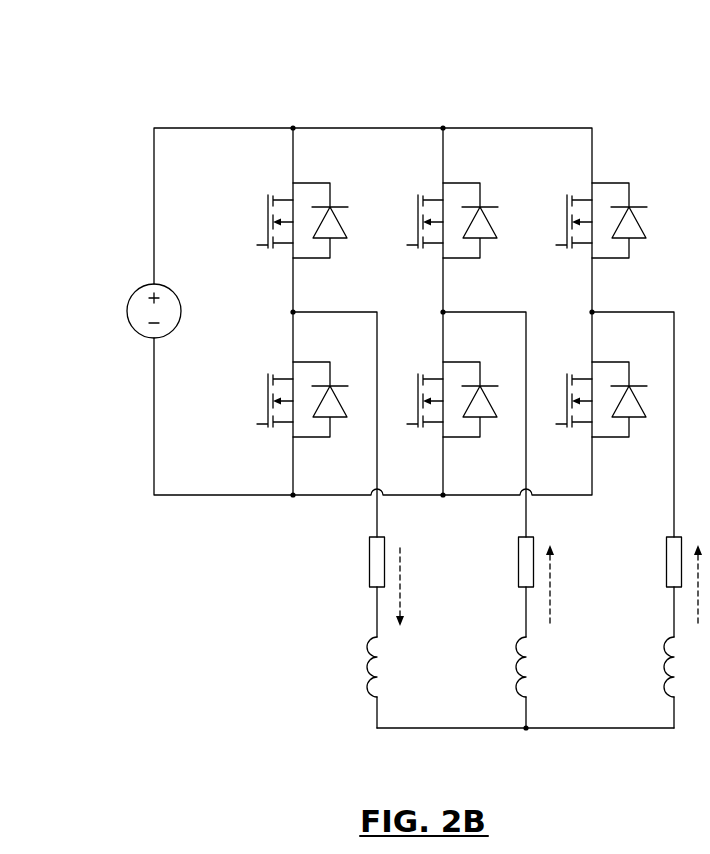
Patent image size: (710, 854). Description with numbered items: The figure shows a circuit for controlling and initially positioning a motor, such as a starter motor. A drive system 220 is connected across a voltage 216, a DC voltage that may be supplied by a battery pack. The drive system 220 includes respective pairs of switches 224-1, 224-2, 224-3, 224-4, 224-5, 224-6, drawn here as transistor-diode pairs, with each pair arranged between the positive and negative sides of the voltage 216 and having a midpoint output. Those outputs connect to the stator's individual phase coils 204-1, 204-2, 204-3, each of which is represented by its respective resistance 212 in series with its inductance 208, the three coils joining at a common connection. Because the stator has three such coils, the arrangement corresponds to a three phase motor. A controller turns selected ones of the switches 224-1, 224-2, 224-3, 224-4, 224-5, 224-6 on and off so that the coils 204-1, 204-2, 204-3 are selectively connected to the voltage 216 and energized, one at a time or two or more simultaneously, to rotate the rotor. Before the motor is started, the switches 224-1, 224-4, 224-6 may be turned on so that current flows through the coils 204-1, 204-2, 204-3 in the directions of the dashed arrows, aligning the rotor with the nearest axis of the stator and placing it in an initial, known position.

The drive system 220 is at (537, 66).
The voltage 216 is at (134, 290).
The switch 224-1 is at (274, 172).
The switch 224-2 is at (272, 452).
The switch 224-3 is at (422, 172).
The switch 224-4 is at (423, 349).
The switch 224-5 is at (571, 172).
The switch 224-6 is at (571, 347).
The resistance 212 is at (369, 560).
The phase coil 204-1 is at (352, 628).
The phase coil 204-2 is at (501, 628).
The phase coil 204-3 is at (648, 626).
The inductance 208 is at (370, 696).